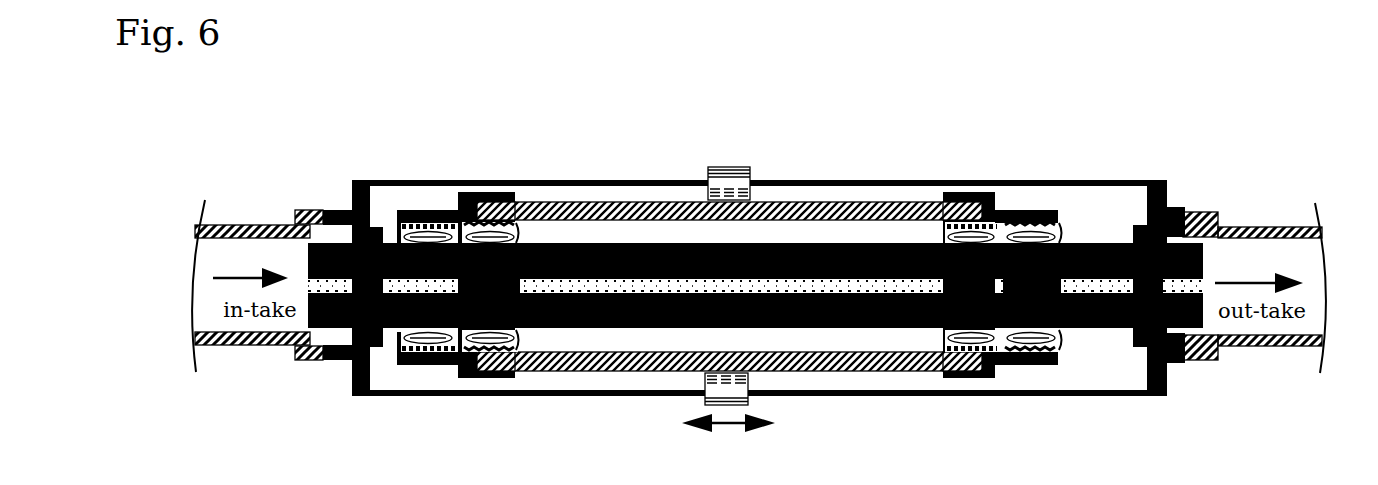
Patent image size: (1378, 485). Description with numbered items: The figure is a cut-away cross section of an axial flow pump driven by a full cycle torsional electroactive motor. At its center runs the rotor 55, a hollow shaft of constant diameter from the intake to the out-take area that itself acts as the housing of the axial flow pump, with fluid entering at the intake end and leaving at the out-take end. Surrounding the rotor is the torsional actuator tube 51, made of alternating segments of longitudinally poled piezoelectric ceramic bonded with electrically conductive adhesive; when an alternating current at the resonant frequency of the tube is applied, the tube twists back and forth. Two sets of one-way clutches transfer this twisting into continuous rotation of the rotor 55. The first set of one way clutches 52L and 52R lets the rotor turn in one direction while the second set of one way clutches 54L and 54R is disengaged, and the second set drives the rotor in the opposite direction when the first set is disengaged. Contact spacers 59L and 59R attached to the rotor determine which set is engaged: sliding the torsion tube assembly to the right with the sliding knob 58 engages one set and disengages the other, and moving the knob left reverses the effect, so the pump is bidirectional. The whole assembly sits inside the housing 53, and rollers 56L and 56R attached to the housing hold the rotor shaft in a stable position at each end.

The torsional actuator tube 51 is at (644, 202).
The first set one way clutch 52L is at (433, 210).
The first set one way clutch 52R is at (960, 192).
The housing 53 is at (877, 181).
The second set one way clutch 54L is at (493, 192).
The second set one way clutch 54R is at (1031, 210).
The rotor 55 is at (806, 243).
The roller 56L is at (373, 227).
The roller 56R is at (1147, 225).
The sliding knob 58 is at (732, 167).
The contact spacer 59L is at (523, 222).
The contact spacer 59R is at (1055, 223).